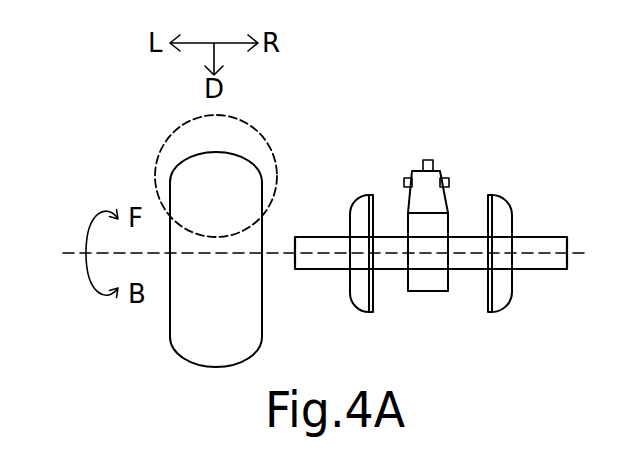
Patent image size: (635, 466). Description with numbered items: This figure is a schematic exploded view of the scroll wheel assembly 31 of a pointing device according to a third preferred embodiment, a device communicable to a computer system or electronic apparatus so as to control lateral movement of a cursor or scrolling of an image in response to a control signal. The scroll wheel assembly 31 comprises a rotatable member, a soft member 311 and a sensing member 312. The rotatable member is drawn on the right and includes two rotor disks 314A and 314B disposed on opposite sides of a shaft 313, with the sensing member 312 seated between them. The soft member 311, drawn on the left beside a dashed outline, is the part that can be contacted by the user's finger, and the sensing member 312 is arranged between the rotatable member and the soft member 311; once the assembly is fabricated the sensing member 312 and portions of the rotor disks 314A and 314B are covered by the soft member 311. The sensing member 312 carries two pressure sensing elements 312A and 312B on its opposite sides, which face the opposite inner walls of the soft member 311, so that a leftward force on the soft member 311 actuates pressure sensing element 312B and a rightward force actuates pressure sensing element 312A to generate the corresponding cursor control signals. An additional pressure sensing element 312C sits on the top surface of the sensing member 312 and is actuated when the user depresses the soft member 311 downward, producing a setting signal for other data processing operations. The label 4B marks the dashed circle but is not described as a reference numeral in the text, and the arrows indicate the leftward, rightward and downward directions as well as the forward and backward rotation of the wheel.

The scroll wheel assembly 31 is at (121, 63).
The ball 4B is at (157, 170).
The soft member 311 is at (210, 165).
The sensing member 312 is at (420, 183).
The pressure sensing element 312A is at (410, 174).
The pressure sensing element 312B is at (446, 170).
The additional pressure sensing element 312C is at (428, 160).
The shaft 313 is at (540, 243).
The rotor disk 314A is at (357, 287).
The rotor disk 314B is at (503, 286).